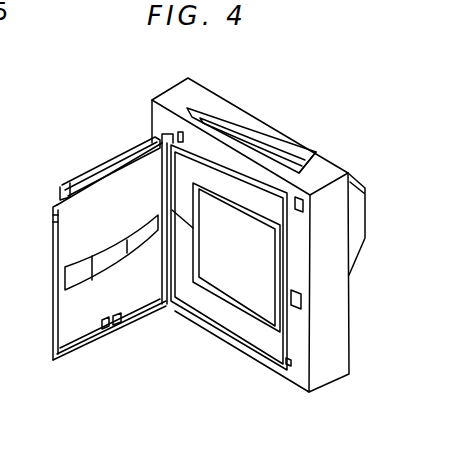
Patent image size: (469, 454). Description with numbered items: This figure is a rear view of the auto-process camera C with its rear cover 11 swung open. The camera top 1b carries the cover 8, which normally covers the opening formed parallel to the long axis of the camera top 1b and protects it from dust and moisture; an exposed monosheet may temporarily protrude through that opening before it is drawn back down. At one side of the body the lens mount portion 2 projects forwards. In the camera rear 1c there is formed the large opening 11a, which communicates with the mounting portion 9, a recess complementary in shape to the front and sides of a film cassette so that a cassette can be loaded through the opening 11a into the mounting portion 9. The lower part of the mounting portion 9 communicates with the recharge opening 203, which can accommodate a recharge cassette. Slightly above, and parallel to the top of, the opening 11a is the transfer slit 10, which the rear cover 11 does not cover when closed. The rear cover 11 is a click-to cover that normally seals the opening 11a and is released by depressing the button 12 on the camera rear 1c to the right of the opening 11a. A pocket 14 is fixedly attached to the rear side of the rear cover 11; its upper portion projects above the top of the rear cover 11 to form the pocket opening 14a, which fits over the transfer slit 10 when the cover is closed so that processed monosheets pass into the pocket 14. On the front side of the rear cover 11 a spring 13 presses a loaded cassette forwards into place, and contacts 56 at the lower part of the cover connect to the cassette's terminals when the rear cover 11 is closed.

The auto-process camera C is at (150, 98).
The camera top 1b is at (192, 97).
The camera rear 1c is at (302, 377).
The lens mount portion 2 is at (355, 232).
The cover 8 is at (269, 140).
The transfer slit 10 is at (205, 127).
The rear cover 11 is at (67, 252).
The opening 11a is at (320, 152).
The button 12 is at (306, 300).
The spring 13 is at (68, 280).
The pocket 14 is at (97, 167).
The pocket opening 14a is at (80, 173).
The contacts 56 is at (105, 327).
The mounting portion 9 is at (225, 286).
The recharge opening 203 is at (249, 333).